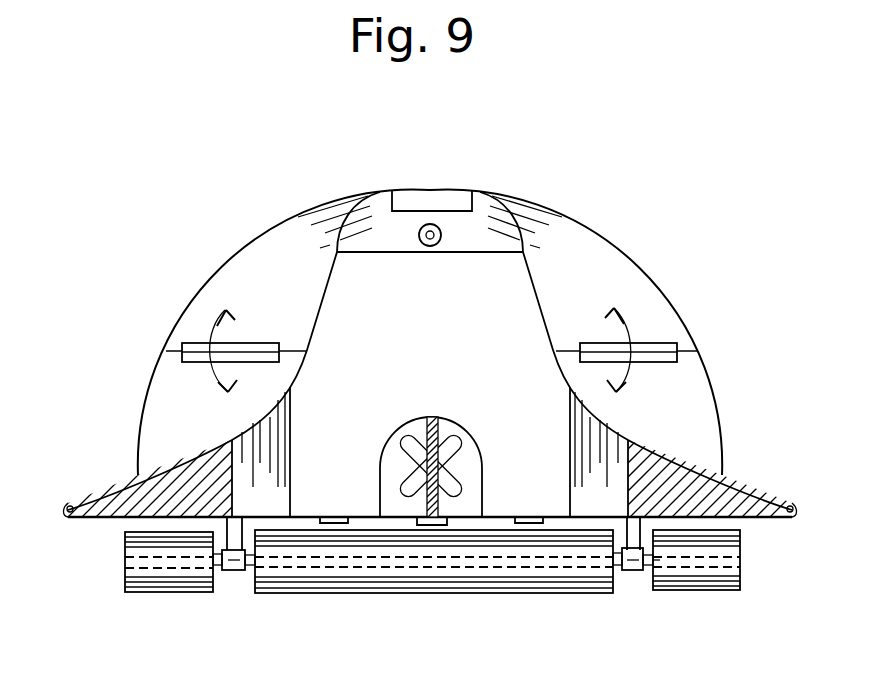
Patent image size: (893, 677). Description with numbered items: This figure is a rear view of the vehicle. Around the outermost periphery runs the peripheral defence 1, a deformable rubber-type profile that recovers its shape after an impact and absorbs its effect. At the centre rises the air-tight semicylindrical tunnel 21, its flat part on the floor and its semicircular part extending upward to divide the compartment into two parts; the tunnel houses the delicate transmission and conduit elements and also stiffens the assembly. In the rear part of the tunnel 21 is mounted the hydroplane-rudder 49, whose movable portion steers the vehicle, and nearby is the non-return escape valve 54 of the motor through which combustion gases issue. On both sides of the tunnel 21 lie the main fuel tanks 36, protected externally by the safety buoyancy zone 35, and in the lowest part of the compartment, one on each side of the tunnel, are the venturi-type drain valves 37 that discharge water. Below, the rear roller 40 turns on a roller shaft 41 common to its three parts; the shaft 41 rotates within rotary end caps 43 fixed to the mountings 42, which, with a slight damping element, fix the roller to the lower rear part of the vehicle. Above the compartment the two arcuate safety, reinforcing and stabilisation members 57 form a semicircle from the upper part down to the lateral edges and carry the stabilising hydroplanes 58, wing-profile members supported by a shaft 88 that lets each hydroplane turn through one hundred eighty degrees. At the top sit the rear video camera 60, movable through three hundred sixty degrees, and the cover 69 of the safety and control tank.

The peripheral defence 1 is at (68, 507).
The air-tight semicylindrical tunnel 21 is at (474, 445).
The safety buoyancy zone 35 is at (110, 518).
The main fuel tanks 36 is at (245, 447).
The drain valves 37 is at (535, 525).
The rear roller 40 is at (176, 578).
The shaft of the roller 41 is at (249, 570).
The mountings for the rear roller 42 is at (658, 582).
The rotary end caps 43 is at (638, 570).
The hydroplane-rudder 49 is at (420, 500).
The non-return escape valve 54 is at (438, 505).
The arcuate safety, reinforcing and stabilisation members 57 is at (240, 247).
The stabilising hydroplanes 58 is at (196, 348).
The rear video camera 60 is at (428, 228).
The cover for the safety and control tank 69 is at (450, 196).
The shaft for rotary movement of the hydroplanes 88 is at (294, 350).